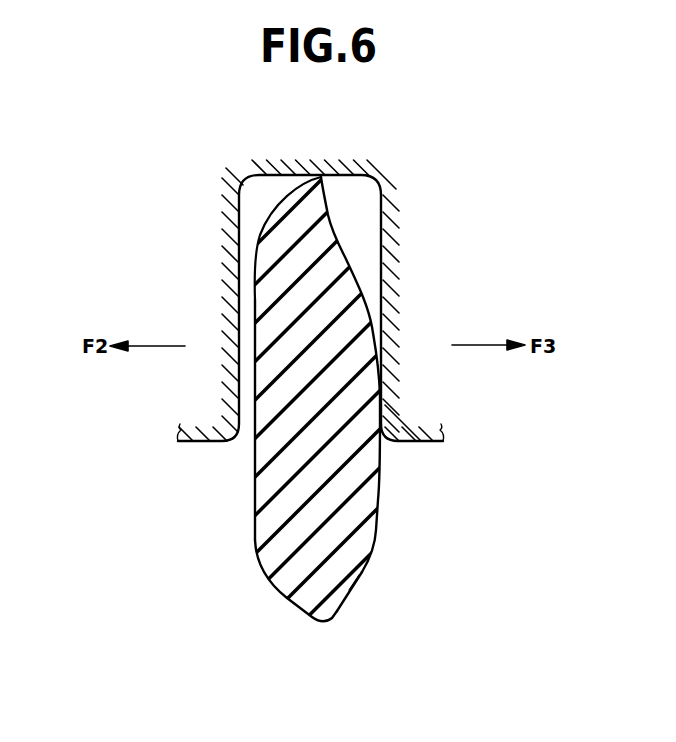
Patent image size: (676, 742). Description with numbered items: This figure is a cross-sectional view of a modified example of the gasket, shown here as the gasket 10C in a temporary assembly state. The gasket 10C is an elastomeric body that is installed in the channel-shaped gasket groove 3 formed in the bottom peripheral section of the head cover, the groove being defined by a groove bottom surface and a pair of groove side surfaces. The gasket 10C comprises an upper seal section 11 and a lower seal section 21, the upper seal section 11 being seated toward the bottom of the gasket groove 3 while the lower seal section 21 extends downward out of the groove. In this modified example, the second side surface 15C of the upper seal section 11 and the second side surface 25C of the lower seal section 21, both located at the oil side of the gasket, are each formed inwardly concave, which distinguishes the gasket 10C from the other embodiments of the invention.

The gasket groove 3 is at (370, 293).
The gasket 10C is at (338, 403).
The upper seal section 11 is at (278, 237).
The second side surface 15C is at (333, 232).
The lower seal section 21 is at (278, 590).
The second side surface 25C is at (344, 590).